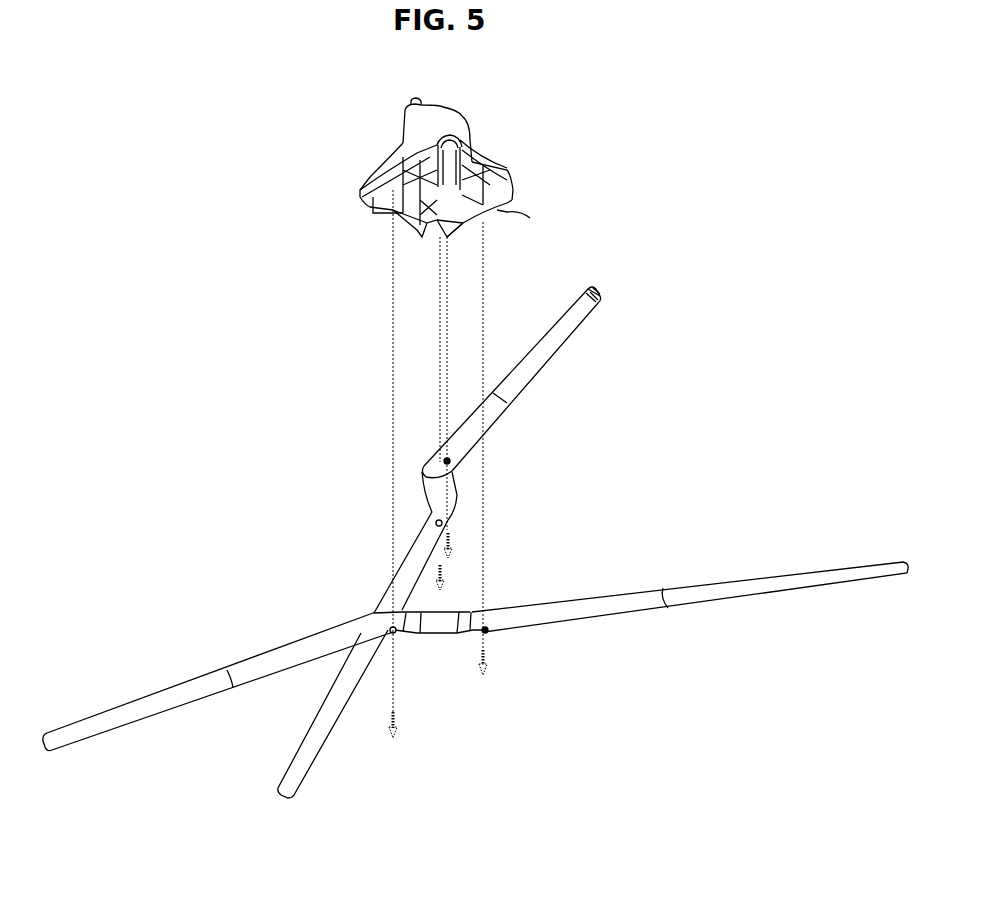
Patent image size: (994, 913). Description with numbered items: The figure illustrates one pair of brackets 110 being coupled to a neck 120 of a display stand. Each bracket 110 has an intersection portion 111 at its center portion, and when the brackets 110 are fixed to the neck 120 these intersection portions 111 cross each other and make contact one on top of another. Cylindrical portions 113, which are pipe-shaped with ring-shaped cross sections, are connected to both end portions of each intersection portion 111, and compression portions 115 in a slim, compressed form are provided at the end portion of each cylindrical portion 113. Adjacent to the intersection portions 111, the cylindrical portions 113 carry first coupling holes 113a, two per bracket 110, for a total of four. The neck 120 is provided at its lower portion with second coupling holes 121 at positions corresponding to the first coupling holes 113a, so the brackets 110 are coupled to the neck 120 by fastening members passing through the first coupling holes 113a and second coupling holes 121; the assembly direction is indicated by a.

The neck 120 is at (497, 142).
The second coupling holes 121 is at (530, 218).
The brackets 110 is at (592, 328).
The compression portions 115 is at (530, 368).
The cylindrical portions 113 is at (473, 433).
The first coupling holes 113a is at (488, 630).
The intersection portions 111 is at (440, 628).
The direction a is at (396, 734).